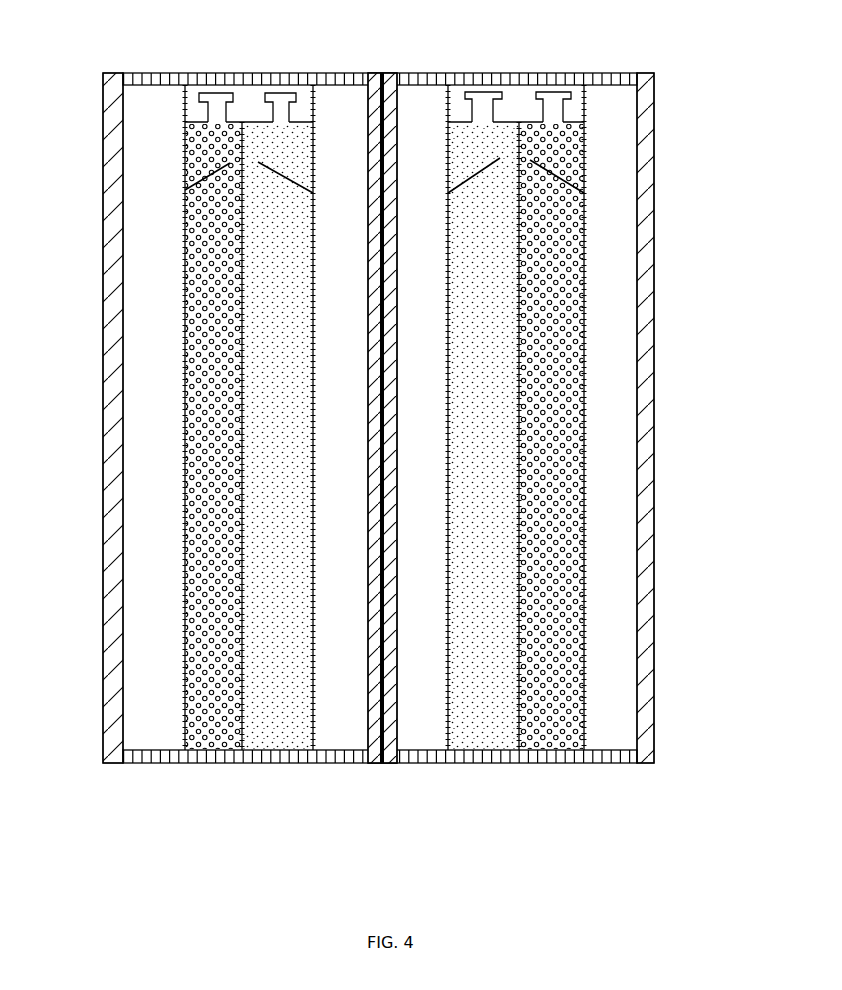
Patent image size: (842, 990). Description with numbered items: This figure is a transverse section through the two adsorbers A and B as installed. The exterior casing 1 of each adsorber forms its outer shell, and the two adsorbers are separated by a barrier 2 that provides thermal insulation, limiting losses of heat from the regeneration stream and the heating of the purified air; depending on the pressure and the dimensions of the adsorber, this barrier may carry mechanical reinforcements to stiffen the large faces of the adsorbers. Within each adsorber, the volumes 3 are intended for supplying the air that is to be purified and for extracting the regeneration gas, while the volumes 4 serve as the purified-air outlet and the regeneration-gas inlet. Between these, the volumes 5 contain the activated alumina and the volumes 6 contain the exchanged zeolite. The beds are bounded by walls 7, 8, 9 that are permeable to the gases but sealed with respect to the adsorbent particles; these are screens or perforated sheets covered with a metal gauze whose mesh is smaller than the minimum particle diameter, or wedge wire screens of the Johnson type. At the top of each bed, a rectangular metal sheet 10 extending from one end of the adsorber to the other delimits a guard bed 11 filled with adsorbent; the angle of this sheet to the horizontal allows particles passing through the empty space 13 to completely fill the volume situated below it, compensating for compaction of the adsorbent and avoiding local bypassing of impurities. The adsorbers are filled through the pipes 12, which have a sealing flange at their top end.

The exterior casing 1 is at (243, 80).
The barrier 2 is at (367, 728).
The volumes V1A and V1B 3 is at (140, 480).
The purified-air outlet and regeneration-gas inlet 4 is at (420, 125).
The volumes V21A and V21B 5 is at (212, 675).
The volumes V22A and V22B 6 is at (282, 693).
The wall 7 is at (580, 427).
The wall 8 is at (520, 397).
The wall 9 is at (447, 298).
The rectangular metal sheet 10 is at (567, 163).
The guard bed 11 is at (560, 138).
The pipes 12 is at (485, 107).
The empty space 13 is at (525, 147).
The adsorber A is at (152, 105).
The adsorber B is at (600, 108).